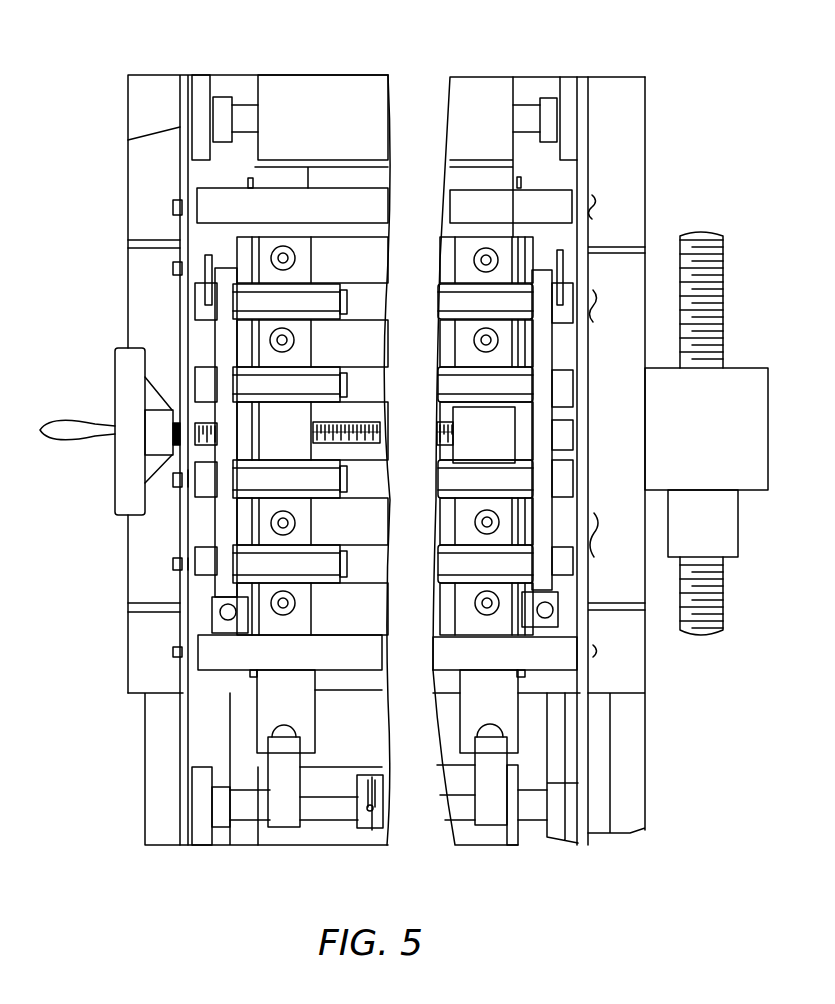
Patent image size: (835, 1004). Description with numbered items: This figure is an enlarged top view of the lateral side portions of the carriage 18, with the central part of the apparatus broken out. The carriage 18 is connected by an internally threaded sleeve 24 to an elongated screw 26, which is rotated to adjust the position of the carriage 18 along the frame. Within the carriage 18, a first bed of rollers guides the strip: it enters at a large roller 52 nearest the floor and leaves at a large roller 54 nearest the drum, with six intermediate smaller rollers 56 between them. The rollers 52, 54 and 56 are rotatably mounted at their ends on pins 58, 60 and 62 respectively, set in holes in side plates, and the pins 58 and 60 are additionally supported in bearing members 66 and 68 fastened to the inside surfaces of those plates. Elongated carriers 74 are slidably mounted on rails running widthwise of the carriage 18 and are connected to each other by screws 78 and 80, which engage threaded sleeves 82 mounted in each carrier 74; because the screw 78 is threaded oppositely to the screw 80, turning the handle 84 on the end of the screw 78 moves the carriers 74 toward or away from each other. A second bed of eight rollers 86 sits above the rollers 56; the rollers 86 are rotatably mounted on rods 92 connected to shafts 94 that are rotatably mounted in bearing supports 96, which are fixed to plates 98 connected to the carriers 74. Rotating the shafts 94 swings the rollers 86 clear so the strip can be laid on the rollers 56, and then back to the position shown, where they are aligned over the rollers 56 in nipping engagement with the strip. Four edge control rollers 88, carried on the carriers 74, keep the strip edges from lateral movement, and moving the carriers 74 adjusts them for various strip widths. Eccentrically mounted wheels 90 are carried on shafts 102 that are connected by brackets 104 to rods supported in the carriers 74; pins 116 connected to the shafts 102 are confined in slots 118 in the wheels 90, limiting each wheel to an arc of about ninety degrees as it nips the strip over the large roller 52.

The carriage 18 is at (318, 72).
The internally threaded sleeve 24 is at (748, 475).
The elongated screw 26 is at (723, 593).
The large roller 52 is at (510, 837).
The large roller 54 is at (470, 77).
The intermediate smaller rollers 56 is at (180, 268).
The pins 58 is at (250, 812).
The pins 60 is at (247, 115).
The pins 62 is at (173, 480).
The bearing members 66 is at (202, 837).
The bearing members 68 is at (203, 88).
The elongated carriers 74 is at (268, 700).
The screw 78 is at (363, 443).
The screw 80 is at (440, 462).
The threaded sleeves 82 is at (318, 425).
The handle 84 is at (125, 390).
The rollers 86 is at (390, 308).
The edge control rollers 88 is at (294, 259).
The eccentrically mounted wheels 90 is at (372, 830).
The rods 92 is at (296, 470).
The shafts 94 is at (222, 330).
The bearing supports 96 is at (223, 245).
The plates 98 is at (248, 348).
The shafts 102 is at (338, 815).
The brackets 104 is at (283, 818).
The pins 116 is at (384, 800).
The slots 118 is at (371, 806).